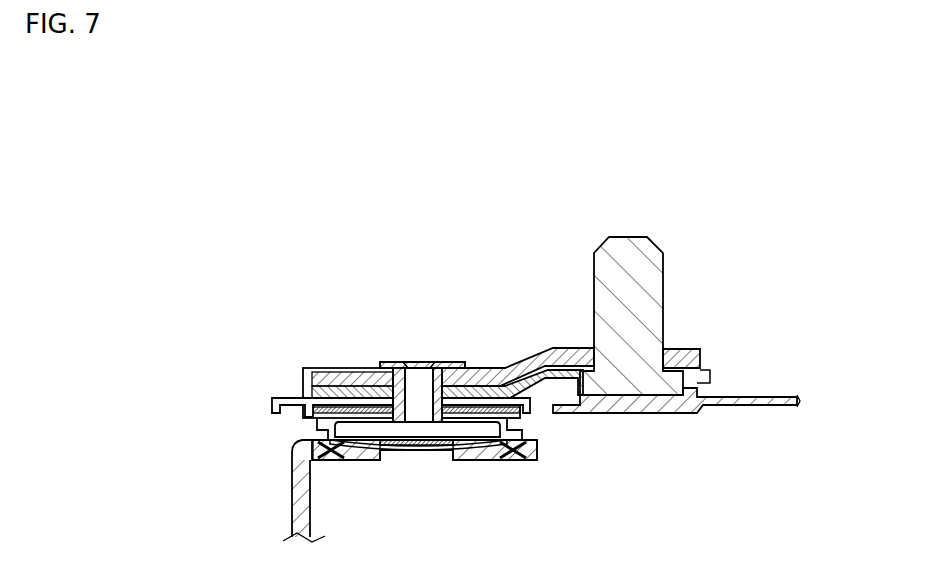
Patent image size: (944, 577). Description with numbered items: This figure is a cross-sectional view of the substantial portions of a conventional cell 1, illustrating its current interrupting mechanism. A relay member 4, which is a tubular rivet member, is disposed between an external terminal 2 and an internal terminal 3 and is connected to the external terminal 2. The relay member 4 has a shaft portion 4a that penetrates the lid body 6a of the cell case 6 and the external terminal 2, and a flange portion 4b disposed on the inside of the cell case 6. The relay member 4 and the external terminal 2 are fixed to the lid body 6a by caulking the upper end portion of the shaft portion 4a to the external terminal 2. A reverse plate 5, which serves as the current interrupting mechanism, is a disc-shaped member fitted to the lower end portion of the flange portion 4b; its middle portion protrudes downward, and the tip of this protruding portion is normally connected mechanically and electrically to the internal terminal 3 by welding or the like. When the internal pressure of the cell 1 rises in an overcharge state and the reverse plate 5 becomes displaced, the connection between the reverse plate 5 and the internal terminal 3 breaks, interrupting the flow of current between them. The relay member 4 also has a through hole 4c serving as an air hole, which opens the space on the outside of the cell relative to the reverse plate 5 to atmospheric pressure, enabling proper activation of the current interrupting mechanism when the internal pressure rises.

The cell 1 is at (521, 241).
The external terminal 2 is at (482, 372).
The internal terminal 3 is at (527, 458).
The relay member 4 is at (383, 361).
The shaft portion 4a is at (413, 372).
The flange portion 4b is at (372, 419).
The through hole 4c is at (420, 372).
The reverse plate 5 is at (423, 444).
The cell case 6 is at (273, 398).
The lid body 6a is at (295, 398).